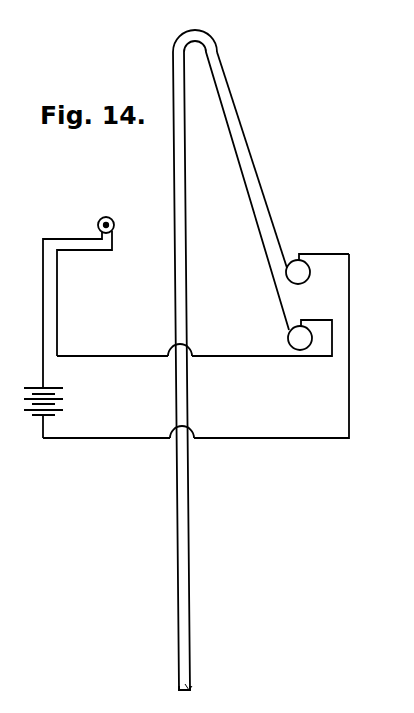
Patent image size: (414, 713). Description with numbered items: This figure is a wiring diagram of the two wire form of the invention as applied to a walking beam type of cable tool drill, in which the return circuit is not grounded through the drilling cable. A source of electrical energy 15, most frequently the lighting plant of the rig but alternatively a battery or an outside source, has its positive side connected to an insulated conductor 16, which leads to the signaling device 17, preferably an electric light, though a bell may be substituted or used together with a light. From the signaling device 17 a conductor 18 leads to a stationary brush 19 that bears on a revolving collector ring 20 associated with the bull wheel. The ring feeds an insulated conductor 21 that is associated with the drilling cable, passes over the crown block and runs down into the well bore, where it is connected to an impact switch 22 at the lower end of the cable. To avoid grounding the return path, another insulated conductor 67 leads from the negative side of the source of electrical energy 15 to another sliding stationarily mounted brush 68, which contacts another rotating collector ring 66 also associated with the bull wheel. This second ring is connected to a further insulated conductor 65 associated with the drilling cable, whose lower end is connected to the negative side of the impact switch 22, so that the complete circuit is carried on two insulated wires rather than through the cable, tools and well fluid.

The source of electrical energy 15 is at (65, 402).
The insulated conductor 16 is at (43, 310).
The signaling device 17 is at (114, 222).
The conductor 18 is at (142, 356).
The stationary brush 19 is at (303, 323).
The revolving collector ring 20 is at (300, 350).
The insulated conductor 21 is at (262, 246).
The impact switch 22 is at (190, 689).
The insulated conductor 65 is at (249, 151).
The rotating collector ring 66 is at (302, 260).
The insulated conductor 67 is at (350, 359).
The sliding stationarily mounted brush 68 is at (308, 254).